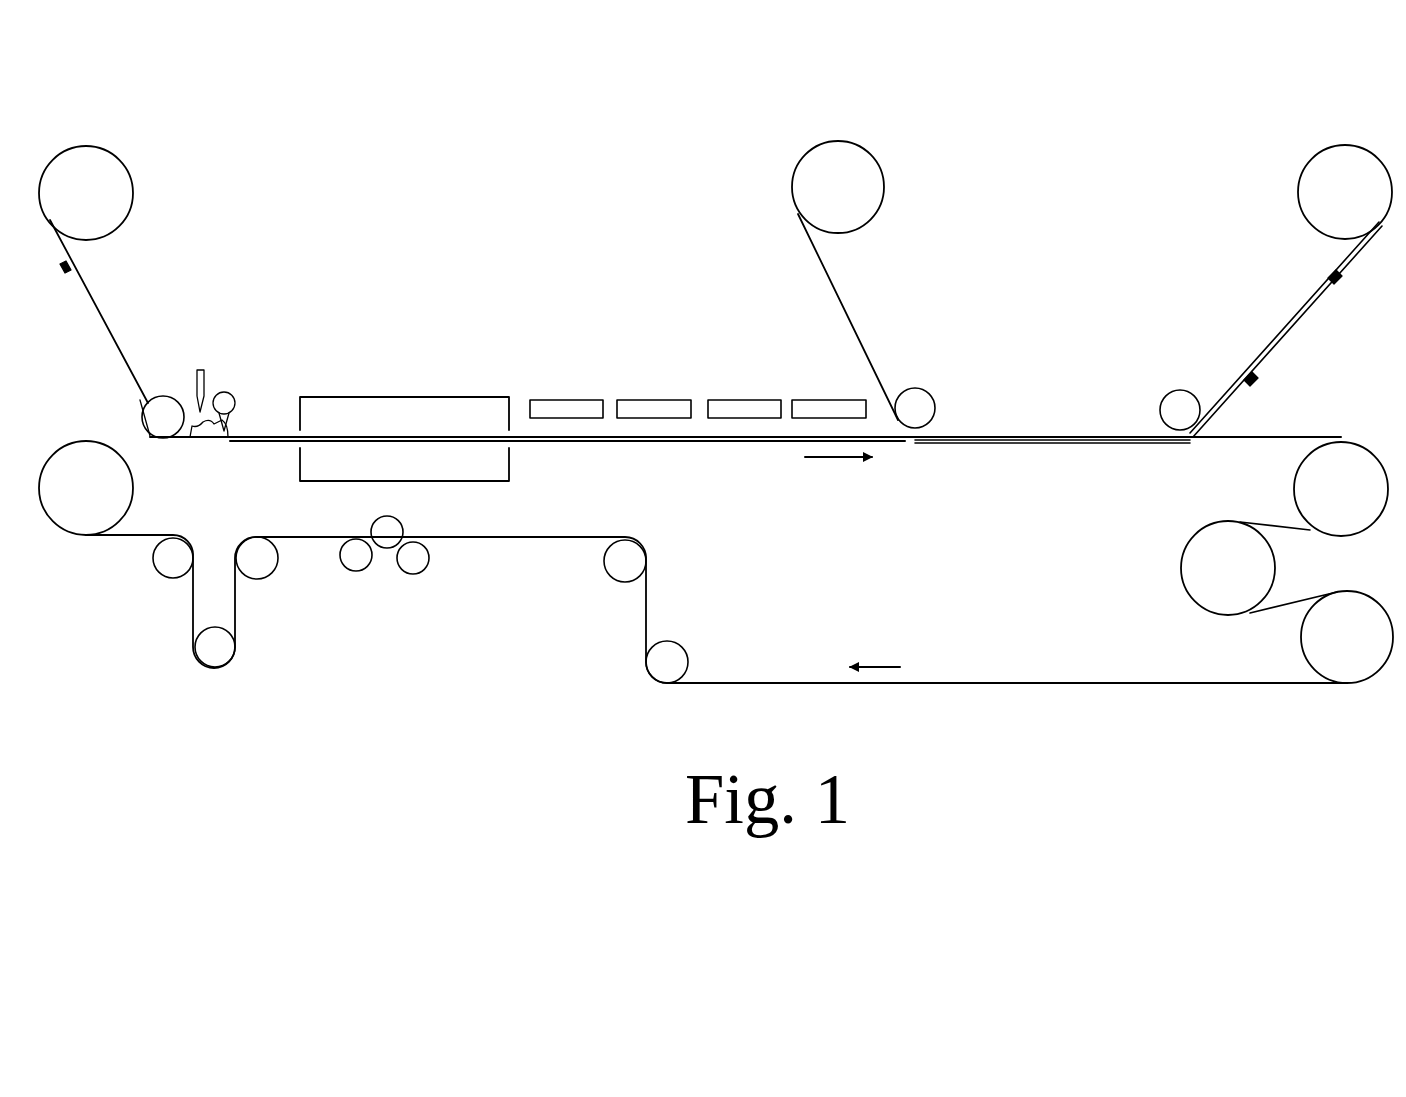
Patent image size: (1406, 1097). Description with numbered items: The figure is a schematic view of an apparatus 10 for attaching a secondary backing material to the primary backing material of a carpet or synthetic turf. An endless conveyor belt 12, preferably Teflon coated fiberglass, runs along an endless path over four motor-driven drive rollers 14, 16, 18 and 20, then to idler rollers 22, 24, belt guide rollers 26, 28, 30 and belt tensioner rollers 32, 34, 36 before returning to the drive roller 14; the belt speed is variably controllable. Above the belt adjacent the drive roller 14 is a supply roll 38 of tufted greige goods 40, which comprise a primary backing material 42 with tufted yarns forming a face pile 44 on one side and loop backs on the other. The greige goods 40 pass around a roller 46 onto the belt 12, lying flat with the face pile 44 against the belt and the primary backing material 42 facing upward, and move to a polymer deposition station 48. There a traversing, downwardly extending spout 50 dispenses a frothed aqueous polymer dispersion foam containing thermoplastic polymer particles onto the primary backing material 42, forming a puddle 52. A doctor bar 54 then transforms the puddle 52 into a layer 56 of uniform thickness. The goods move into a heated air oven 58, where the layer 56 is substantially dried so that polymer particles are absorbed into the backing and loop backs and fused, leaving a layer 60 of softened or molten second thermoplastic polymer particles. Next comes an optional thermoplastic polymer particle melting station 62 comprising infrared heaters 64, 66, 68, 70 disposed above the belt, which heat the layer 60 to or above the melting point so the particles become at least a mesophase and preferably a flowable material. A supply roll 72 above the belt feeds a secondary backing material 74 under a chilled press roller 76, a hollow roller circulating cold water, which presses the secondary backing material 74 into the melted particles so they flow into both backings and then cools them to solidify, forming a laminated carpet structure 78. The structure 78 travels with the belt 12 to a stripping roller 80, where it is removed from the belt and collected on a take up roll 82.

The apparatus 10 is at (511, 155).
The endless conveyor belt 12 is at (568, 540).
The drive roller 14 is at (78, 517).
The drive roller 16 is at (1345, 468).
The drive roller 18 is at (1204, 555).
The drive roller 20 is at (1342, 650).
The idler roller 22 is at (660, 665).
The idler roller 24 is at (623, 565).
The belt guide roller 26 is at (413, 558).
The belt guide roller 28 is at (387, 530).
The belt guide roller 30 is at (356, 556).
The belt tensioner roller 32 is at (257, 562).
The belt tensioner roller 34 is at (215, 648).
The belt tensioner roller 36 is at (173, 560).
The supply roll 38 is at (92, 165).
The tufted greige goods 40 is at (118, 406).
The primary backing material 42 is at (82, 287).
The face pile 44 is at (102, 372).
The roller 46 is at (160, 405).
The polymer deposition station 48 is at (196, 458).
The spout 50 is at (197, 372).
The puddle 52 is at (214, 440).
The doctor bar 54 is at (224, 403).
The layer 56 is at (258, 435).
The heated air oven 58 is at (390, 395).
The layer 60 is at (520, 437).
The thermoplastic polymer particle melting station 62 is at (704, 462).
The infrared heater 64 is at (572, 412).
The infrared heater 66 is at (669, 412).
The infrared heater 68 is at (750, 412).
The infrared heater 70 is at (830, 412).
The supply roll 72 is at (836, 173).
The secondary backing material 74 is at (843, 302).
The chilled press roller 76 is at (914, 408).
The laminated carpet structure 78 is at (1280, 330).
The stripping roller 80 is at (1178, 410).
The take up roll 82 is at (1327, 186).